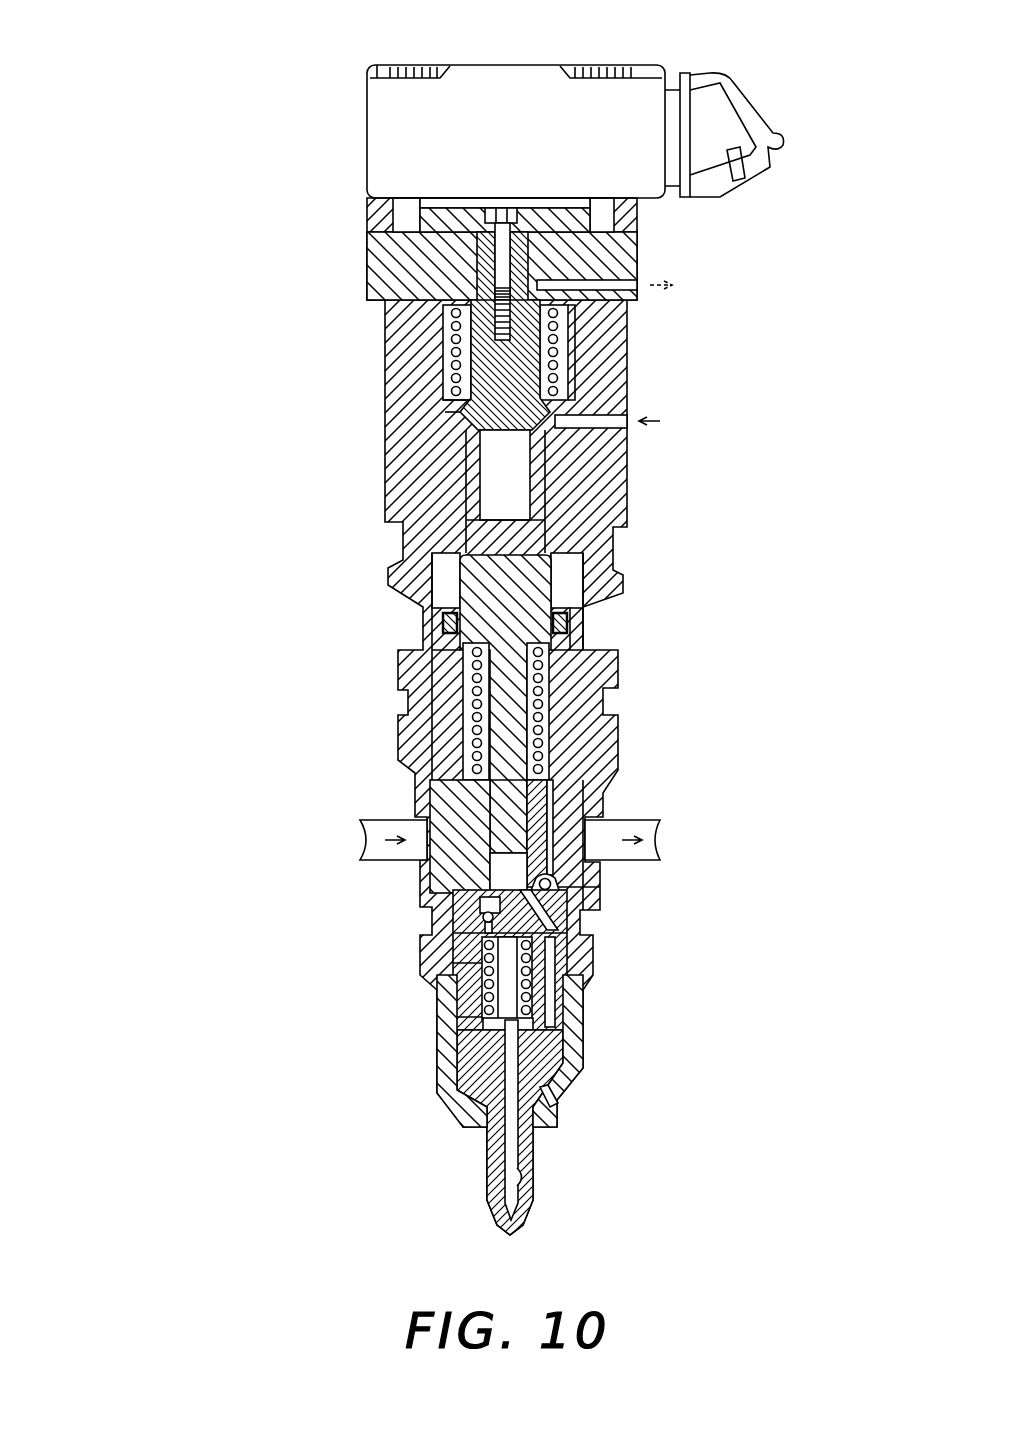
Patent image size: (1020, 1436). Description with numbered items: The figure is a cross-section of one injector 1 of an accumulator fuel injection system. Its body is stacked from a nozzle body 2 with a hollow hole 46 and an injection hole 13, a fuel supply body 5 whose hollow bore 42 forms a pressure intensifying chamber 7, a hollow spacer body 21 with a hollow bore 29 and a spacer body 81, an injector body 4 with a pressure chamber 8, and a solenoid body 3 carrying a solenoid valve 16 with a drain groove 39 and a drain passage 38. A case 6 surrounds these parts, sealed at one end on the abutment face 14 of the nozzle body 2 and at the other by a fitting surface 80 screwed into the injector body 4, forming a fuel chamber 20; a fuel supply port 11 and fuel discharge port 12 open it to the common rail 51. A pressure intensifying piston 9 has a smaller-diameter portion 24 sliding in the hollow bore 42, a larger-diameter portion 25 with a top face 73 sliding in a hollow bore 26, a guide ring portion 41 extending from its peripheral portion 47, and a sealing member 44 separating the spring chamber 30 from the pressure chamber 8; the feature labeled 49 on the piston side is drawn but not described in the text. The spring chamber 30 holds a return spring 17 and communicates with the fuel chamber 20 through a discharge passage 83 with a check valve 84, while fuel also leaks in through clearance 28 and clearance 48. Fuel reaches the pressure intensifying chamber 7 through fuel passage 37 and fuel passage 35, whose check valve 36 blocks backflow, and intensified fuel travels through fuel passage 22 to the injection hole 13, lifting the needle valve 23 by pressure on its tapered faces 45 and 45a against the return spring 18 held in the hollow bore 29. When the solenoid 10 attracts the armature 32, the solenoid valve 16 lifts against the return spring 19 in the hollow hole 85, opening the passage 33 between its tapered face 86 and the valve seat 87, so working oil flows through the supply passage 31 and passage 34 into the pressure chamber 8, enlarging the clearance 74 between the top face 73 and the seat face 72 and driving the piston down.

The injector 1 is at (310, 322).
The nozzle body 2 is at (470, 1080).
The solenoid body 3 is at (405, 260).
The injector body 4 is at (590, 528).
The fuel supply body 5 is at (430, 800).
The case 6 is at (575, 962).
The pressure intensifying chamber 7 is at (582, 912).
The pressure chamber 8 is at (400, 557).
The pressure intensifying piston 9 is at (590, 632).
The solenoid 10 is at (535, 105).
The fuel supply port 11 is at (425, 833).
The fuel discharge port 12 is at (598, 845).
The injection hole 13 is at (495, 1228).
The abutment face 14 is at (545, 1115).
The solenoid valve 16 is at (575, 340).
The return spring 17 is at (605, 705).
The return spring 18 is at (480, 975).
The return spring 19 is at (572, 373).
The fuel chamber 20 is at (600, 812).
The hollow spacer body 21 is at (470, 997).
The fuel passage 22 is at (565, 1095).
The needle valve 23 is at (500, 1152).
The smaller-diameter portion 24 is at (590, 753).
The larger-diameter portion 25 is at (618, 590).
The hollow bore 26 is at (465, 720).
The clearance 28 is at (445, 830).
The hollow bore 29 is at (520, 1020).
The spring chamber 30 is at (405, 662).
The supply passage 31 is at (598, 425).
The armature 32 is at (643, 219).
The passage 33 is at (552, 420).
The passage 34 is at (455, 420).
The fuel passage 35 is at (450, 925).
The check valve 36 is at (482, 915).
The fuel passage 37 is at (463, 950).
The drain passage 38 is at (612, 283).
The drain groove 39 is at (452, 291).
The guide ring portion 41 is at (615, 672).
The hollow bore 42 is at (592, 875).
The sealing member 44 is at (575, 621).
The tapered face 45 is at (520, 1218).
The tapered face 45a is at (555, 1100).
The hollow hole 46 is at (530, 1190).
The peripheral portion 47 is at (412, 607).
The clearance 48 is at (400, 755).
The groove 49 is at (408, 700).
The common rail 51 is at (660, 835).
The seat face 72 is at (600, 565).
The top face 73 is at (423, 540).
The clearance 74 is at (583, 527).
The fitting surface 80 is at (610, 735).
The spacer body 81 is at (582, 932).
The discharge passage 83 is at (585, 800).
The check valve 84 is at (592, 895).
The hollow hole 85 is at (580, 410).
The tapered face 86 is at (458, 428).
The valve seat 87 is at (455, 400).